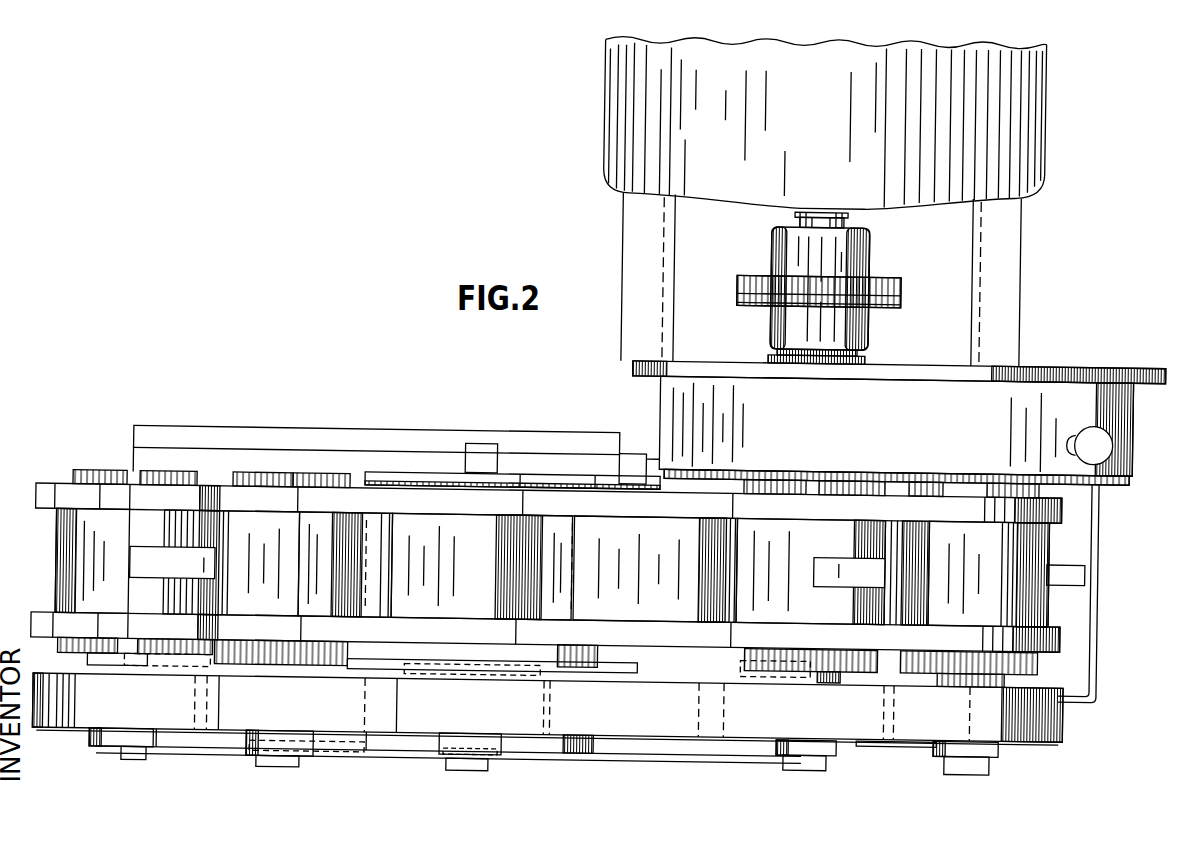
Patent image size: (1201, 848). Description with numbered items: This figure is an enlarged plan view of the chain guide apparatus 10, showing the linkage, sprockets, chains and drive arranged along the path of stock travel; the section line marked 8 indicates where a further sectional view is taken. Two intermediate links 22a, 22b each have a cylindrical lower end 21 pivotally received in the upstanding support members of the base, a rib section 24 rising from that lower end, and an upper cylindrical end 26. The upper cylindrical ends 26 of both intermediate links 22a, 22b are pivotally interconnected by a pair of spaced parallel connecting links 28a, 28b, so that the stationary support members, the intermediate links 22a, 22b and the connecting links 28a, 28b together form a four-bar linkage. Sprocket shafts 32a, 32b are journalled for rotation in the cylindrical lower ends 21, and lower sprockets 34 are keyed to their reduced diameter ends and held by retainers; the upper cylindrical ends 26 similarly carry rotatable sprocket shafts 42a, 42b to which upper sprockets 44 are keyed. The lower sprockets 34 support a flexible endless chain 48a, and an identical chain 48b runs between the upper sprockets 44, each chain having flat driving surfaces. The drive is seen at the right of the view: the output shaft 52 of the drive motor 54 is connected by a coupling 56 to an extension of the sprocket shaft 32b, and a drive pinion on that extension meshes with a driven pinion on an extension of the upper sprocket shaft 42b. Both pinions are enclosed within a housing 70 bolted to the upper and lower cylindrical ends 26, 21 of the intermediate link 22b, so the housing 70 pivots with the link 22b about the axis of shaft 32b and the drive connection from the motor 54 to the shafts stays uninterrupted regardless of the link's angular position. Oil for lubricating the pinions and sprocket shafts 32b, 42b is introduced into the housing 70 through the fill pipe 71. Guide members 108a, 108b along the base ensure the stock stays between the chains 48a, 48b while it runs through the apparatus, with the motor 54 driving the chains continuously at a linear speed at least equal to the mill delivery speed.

The apparatus 10 is at (330, 340).
The section line 8- 8 is at (595, 412).
The cylindrical lower end 21 is at (70, 544).
The intermediate link 22a is at (158, 554).
The intermediate link 22b is at (880, 555).
The rib section 24 is at (205, 561).
The upper cylindrical end 26 is at (297, 516).
The connecting link 28a is at (643, 619).
The connecting link 28b is at (653, 499).
The sprocket shaft 32a is at (121, 756).
The sprocket shaft 32b is at (804, 759).
The lower sprocket 34 is at (50, 732).
The sprocket shaft 42a is at (296, 753).
The sprocket shaft 42b is at (968, 754).
The upper sprocket 44 is at (243, 755).
The chain 48a is at (180, 711).
The chain 48b is at (386, 710).
The output shaft 52 is at (841, 210).
The drive motor 54 is at (1024, 108).
The coupling 56 is at (878, 275).
The housing 70 is at (1117, 394).
The fill pipe 71 is at (1079, 416).
The guide member 108a is at (432, 746).
The guide member 108b is at (388, 655).